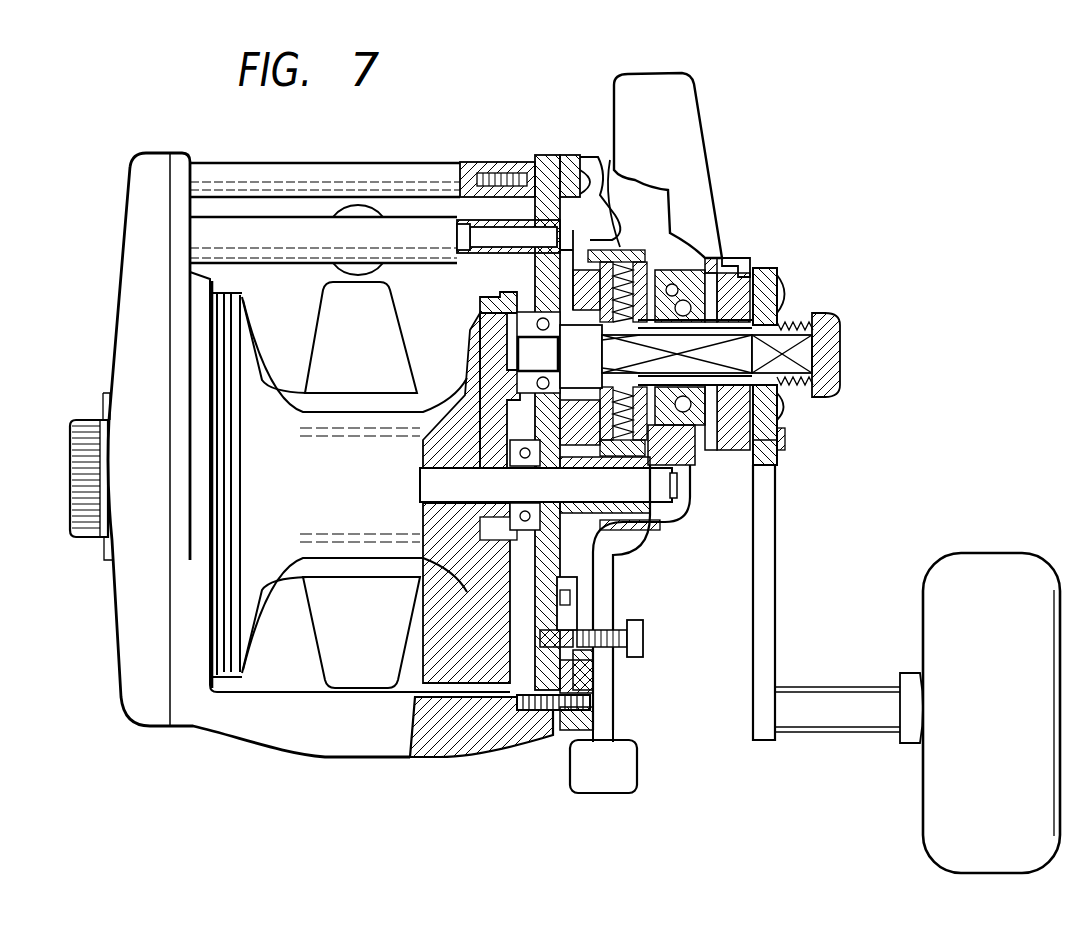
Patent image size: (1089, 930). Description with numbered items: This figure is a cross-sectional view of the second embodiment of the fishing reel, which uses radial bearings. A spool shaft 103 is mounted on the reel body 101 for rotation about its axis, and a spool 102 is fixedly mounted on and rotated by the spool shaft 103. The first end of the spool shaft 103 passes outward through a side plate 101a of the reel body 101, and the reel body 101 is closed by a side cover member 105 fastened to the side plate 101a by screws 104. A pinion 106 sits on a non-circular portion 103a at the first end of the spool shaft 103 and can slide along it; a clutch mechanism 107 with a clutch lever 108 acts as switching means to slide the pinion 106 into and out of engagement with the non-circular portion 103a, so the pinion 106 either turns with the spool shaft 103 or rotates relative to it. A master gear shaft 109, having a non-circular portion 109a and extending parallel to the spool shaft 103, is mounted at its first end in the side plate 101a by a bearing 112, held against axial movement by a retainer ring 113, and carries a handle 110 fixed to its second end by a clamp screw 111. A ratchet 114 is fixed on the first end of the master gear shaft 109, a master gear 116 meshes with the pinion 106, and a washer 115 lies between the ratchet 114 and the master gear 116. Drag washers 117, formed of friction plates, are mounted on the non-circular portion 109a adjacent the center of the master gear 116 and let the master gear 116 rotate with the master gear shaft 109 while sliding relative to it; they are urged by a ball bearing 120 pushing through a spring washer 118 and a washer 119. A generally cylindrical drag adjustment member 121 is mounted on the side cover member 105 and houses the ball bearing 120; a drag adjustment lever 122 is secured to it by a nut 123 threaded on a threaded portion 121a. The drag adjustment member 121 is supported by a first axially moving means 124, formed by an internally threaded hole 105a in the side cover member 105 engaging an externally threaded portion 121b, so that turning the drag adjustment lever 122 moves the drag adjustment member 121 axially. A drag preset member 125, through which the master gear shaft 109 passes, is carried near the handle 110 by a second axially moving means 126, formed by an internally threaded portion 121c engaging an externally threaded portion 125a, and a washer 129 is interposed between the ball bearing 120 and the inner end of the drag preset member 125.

The reel body 101 is at (540, 155).
The side plate 101a is at (460, 268).
The spool 102 is at (370, 420).
The spool shaft 103 is at (442, 497).
The non-circular portion 103a is at (533, 484).
The screws 104 is at (540, 713).
The side cover member 105 is at (660, 528).
The internally threaded hole 105a is at (667, 445).
The pinion 106 is at (600, 600).
The clutch mechanism 107 is at (582, 644).
The clutch lever 108 is at (640, 720).
The master gear shaft 109 is at (812, 348).
The non-circular portion 109a is at (600, 352).
The handle 110 is at (778, 602).
The clamp screw 111 is at (835, 360).
The bearing 112 is at (480, 308).
The retainer ring 113 is at (500, 335).
The ratchet 114 is at (612, 158).
The washer 115 is at (500, 413).
The master gear 116 is at (655, 260).
The drag washers 117 is at (625, 262).
The spring washer 118 is at (683, 255).
The washer 119 is at (700, 255).
The ball bearing 120 is at (732, 432).
The drag adjustment member 121 is at (777, 458).
The threaded portion 121a is at (782, 282).
The externally threaded portion 121b is at (765, 470).
The internally threaded portion 121c is at (779, 407).
The drag adjustment lever 122 is at (685, 97).
The nut 123 is at (738, 258).
The first axially moving means 124 is at (683, 425).
The drag preset member 125 is at (750, 260).
The externally threaded portion 125a is at (782, 422).
The second axially moving means 126 is at (782, 443).
The washer 129 is at (712, 260).